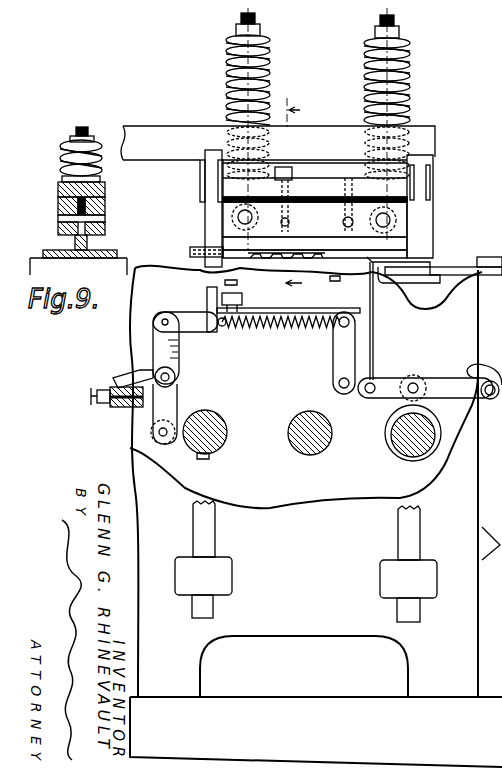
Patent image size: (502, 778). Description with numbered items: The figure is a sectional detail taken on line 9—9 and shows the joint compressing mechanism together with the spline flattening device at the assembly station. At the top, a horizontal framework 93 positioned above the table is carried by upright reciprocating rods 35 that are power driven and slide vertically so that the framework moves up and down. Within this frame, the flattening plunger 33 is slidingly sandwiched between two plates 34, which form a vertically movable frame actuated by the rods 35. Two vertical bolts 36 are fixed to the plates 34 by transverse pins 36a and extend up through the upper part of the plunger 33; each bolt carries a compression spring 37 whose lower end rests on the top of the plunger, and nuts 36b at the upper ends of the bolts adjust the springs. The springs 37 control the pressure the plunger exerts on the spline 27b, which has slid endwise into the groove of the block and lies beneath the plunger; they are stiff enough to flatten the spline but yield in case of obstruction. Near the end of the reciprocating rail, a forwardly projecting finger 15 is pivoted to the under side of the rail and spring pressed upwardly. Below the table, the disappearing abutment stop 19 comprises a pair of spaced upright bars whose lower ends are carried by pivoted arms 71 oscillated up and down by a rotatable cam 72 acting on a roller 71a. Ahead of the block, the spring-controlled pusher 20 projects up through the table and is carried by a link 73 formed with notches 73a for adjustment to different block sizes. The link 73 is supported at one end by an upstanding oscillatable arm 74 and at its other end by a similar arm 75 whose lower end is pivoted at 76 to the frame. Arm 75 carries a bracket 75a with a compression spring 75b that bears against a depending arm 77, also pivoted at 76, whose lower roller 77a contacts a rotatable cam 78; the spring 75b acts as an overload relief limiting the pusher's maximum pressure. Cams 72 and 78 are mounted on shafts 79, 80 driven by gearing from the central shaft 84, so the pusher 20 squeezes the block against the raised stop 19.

The section line 9 is at (304, 195).
The forwardly projecting finger 15 is at (375, 258).
The disappearing abutment stop 19 is at (373, 318).
The spring-controlled pusher 20 is at (247, 292).
The spline 27b is at (60, 250).
The flattening plunger 33 is at (90, 246).
The plates 34 is at (60, 200).
The reciprocating rods 35 is at (418, 218).
The vertical bolts 36 is at (238, 22).
The transverse pins 36a is at (236, 216).
The nuts 36b is at (398, 34).
The compression springs 37 is at (228, 58).
The pivoted arms 71 is at (383, 385).
The roller 71a is at (413, 378).
The rotatable cam 72 is at (392, 420).
The link 73 is at (255, 332).
The notches 73a is at (303, 308).
The oscillatable arm 74 is at (333, 372).
The oscillatable arm 75 is at (180, 353).
The bracket 75a is at (150, 364).
The compression spring 75b is at (135, 410).
The pivot 76 is at (170, 377).
The depending arm 77 is at (177, 402).
The roller 77a is at (150, 433).
The rotatable cam 78 is at (205, 457).
The shaft 79 is at (405, 455).
The shaft 80 is at (216, 420).
The central shaft 84 is at (310, 455).
The horizontal framework 93 is at (278, 143).